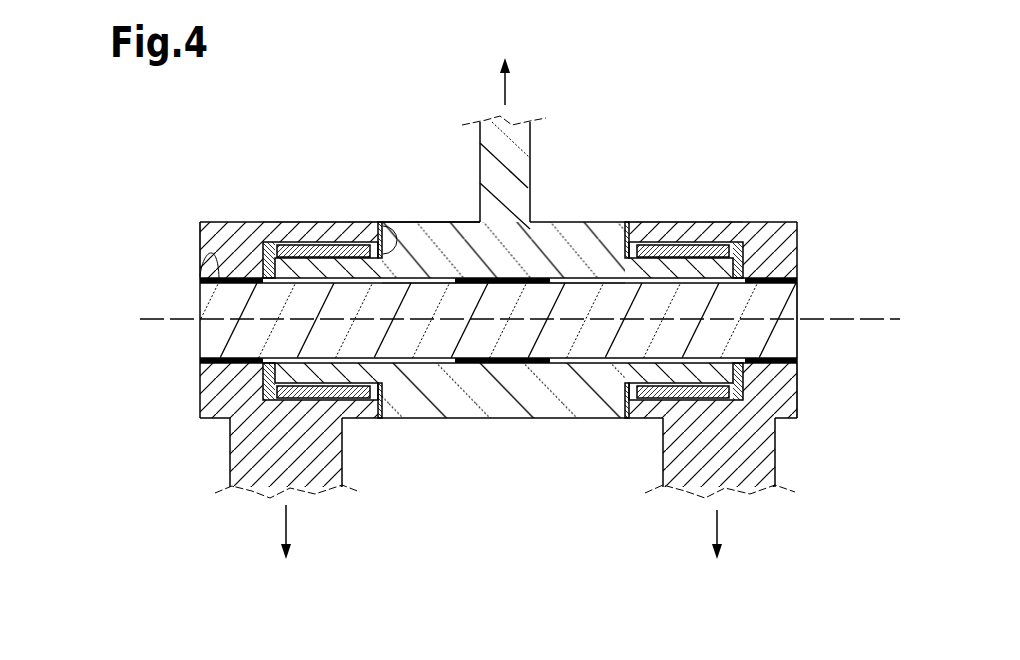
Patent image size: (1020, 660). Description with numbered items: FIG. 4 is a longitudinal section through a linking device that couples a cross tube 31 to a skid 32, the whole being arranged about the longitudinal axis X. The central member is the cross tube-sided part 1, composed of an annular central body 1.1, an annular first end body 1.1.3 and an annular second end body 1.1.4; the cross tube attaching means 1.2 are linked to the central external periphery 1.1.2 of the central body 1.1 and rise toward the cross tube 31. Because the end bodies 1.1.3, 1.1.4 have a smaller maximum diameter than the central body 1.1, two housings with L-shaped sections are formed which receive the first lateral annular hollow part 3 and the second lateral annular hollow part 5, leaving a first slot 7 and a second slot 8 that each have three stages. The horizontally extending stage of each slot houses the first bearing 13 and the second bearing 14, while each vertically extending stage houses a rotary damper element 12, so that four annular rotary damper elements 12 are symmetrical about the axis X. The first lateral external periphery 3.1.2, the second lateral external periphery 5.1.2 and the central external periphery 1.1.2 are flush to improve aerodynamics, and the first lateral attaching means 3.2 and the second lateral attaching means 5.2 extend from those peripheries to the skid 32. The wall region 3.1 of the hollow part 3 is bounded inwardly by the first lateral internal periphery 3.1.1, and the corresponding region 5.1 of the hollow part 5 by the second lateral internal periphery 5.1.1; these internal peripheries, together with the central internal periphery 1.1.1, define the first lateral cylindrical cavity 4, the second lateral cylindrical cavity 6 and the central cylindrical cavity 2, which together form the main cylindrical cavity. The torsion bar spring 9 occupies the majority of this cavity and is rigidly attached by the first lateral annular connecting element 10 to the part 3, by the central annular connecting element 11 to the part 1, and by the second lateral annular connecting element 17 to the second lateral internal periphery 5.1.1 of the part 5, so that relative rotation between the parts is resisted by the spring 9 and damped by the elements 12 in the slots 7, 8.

The cross tube-sided part 1 is at (498, 249).
The annular central body 1.1 is at (498, 188).
The central internal periphery 1.1.1 is at (427, 288).
The central external periphery 1.1.2 is at (417, 222).
The annular first end body 1.1.3 is at (308, 222).
The annular second end body 1.1.4 is at (655, 222).
The cross tube attaching means 1.2 is at (530, 135).
The central cylindrical cavity 2 is at (585, 358).
The first lateral annular hollow part 3 is at (258, 316).
The left end part body 3.1 is at (222, 418).
The first lateral internal periphery 3.1.1 is at (198, 245).
The first lateral external periphery 3.1.2 is at (240, 222).
The first lateral attaching means 3.2 is at (332, 463).
The first lateral cylindrical cavity 4 is at (200, 280).
The second lateral annular hollow part 5 is at (765, 309).
The right end part body 5.1 is at (764, 425).
The second lateral internal periphery 5.1.1 is at (797, 380).
The second lateral external periphery 5.1.2 is at (755, 222).
The second lateral attaching means 5.2 is at (760, 462).
The second lateral cylindrical cavity 6 is at (797, 283).
The first slot 7 is at (388, 222).
The second slot 8 is at (628, 250).
The torsion bar spring 9 is at (772, 332).
The first lateral annular connecting element 10 is at (230, 358).
The central annular connecting element 11 is at (507, 365).
The rotary damper element 12 is at (268, 222).
The first bearing 13 is at (338, 222).
The second bearing 14 is at (690, 222).
The second lateral annular connecting element 17 is at (780, 356).
The cross tube 31 is at (505, 66).
The skid 32 is at (501, 548).
The longitudinal axis X is at (885, 319).